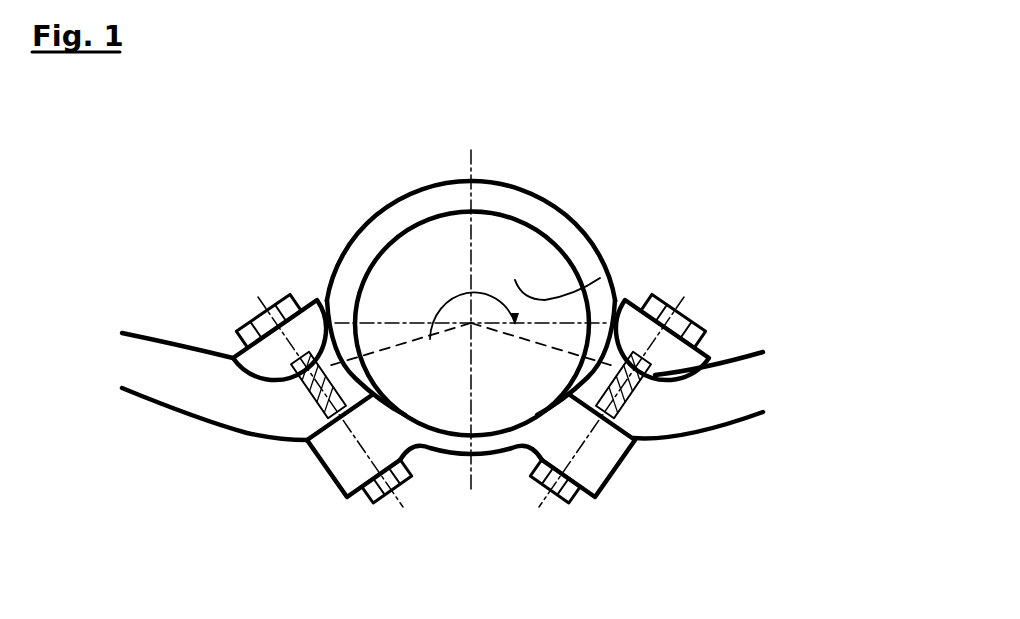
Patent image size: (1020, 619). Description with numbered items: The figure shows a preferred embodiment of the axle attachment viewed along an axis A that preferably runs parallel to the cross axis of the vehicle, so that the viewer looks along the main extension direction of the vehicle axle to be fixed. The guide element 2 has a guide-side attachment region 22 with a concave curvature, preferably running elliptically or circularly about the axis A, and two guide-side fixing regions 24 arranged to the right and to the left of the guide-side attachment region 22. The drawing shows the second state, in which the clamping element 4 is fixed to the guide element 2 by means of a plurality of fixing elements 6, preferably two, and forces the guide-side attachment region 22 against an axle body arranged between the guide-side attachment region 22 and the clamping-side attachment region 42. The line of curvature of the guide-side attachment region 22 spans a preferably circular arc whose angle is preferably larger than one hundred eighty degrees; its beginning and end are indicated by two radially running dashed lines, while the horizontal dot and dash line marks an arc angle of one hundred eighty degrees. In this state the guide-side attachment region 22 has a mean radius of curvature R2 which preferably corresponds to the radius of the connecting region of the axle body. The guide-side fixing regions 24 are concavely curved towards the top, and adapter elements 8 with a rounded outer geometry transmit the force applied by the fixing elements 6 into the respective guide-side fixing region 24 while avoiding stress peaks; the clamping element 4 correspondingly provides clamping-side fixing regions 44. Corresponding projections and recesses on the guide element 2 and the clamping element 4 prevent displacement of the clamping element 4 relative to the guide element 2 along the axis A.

The guide element 2 is at (550, 213).
The guide-side attachment region 22 is at (378, 265).
The adapter element 8 is at (317, 300).
The fixing element 6 is at (633, 375).
The clamping element 4 is at (445, 453).
The guide-side fixing region 24 is at (687, 303).
The clamping-side fixing region 44 is at (385, 443).
The clamping-side attachment region 42 is at (546, 398).
The axis A is at (471, 323).
The radius of curvature in the second state R2 is at (471, 323).